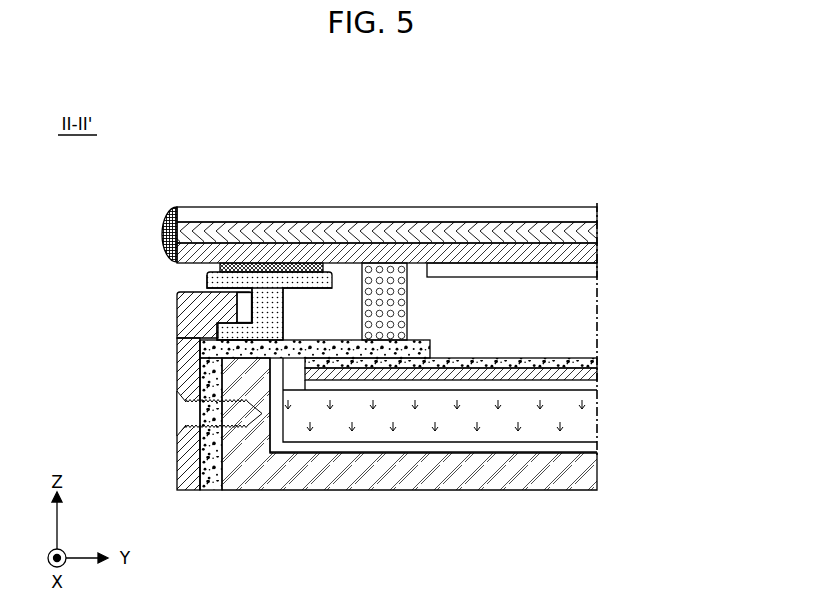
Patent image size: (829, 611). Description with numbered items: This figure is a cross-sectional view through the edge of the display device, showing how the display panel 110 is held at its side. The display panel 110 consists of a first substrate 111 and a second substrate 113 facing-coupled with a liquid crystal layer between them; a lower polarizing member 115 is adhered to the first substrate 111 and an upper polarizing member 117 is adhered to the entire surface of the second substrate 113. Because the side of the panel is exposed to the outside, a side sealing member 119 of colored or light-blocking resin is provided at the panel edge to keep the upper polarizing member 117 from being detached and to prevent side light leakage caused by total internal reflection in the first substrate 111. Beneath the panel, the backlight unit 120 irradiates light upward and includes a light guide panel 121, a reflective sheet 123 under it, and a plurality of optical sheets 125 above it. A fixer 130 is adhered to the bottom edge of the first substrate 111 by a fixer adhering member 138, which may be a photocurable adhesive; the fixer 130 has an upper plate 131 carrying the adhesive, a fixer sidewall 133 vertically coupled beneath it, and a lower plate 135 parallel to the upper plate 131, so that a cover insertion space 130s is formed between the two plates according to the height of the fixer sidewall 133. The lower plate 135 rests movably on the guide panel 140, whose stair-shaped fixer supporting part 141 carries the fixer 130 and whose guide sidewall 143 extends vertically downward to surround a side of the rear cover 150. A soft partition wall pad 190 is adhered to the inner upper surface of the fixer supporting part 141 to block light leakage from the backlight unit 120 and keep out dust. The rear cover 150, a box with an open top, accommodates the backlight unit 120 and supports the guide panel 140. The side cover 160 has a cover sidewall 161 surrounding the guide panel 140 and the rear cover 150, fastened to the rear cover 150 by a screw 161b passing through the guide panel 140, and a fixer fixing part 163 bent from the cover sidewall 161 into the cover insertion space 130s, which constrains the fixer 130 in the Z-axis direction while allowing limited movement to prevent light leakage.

The display panel 110 is at (408, 236).
The first substrate 111 is at (597, 232).
The second substrate 113 is at (597, 252).
The lower polarizing member 115 is at (597, 272).
The upper polarizing member 117 is at (597, 214).
The side sealing member 119 is at (165, 236).
The backlight unit 120 is at (500, 407).
The light guide panel 121 is at (597, 417).
The reflective sheet 123 is at (597, 447).
The optical sheets 125 is at (597, 362).
The fixer 130 is at (248, 222).
The upper plate 131 is at (207, 278).
The fixer sidewall 133 is at (278, 307).
The lower plate 135 is at (226, 335).
The cover insertion space 130s is at (248, 317).
The fixer adhering member 138 is at (313, 270).
The guide panel 140 is at (315, 463).
The fixer supporting part 141 is at (293, 358).
The guide sidewall 143 is at (213, 453).
The rear cover 150 is at (595, 475).
The side cover 160 is at (149, 391).
The cover sidewall 161 is at (190, 360).
The screw 161b is at (172, 415).
The fixer fixing part 163 is at (220, 313).
The partition wall pad 190 is at (395, 310).